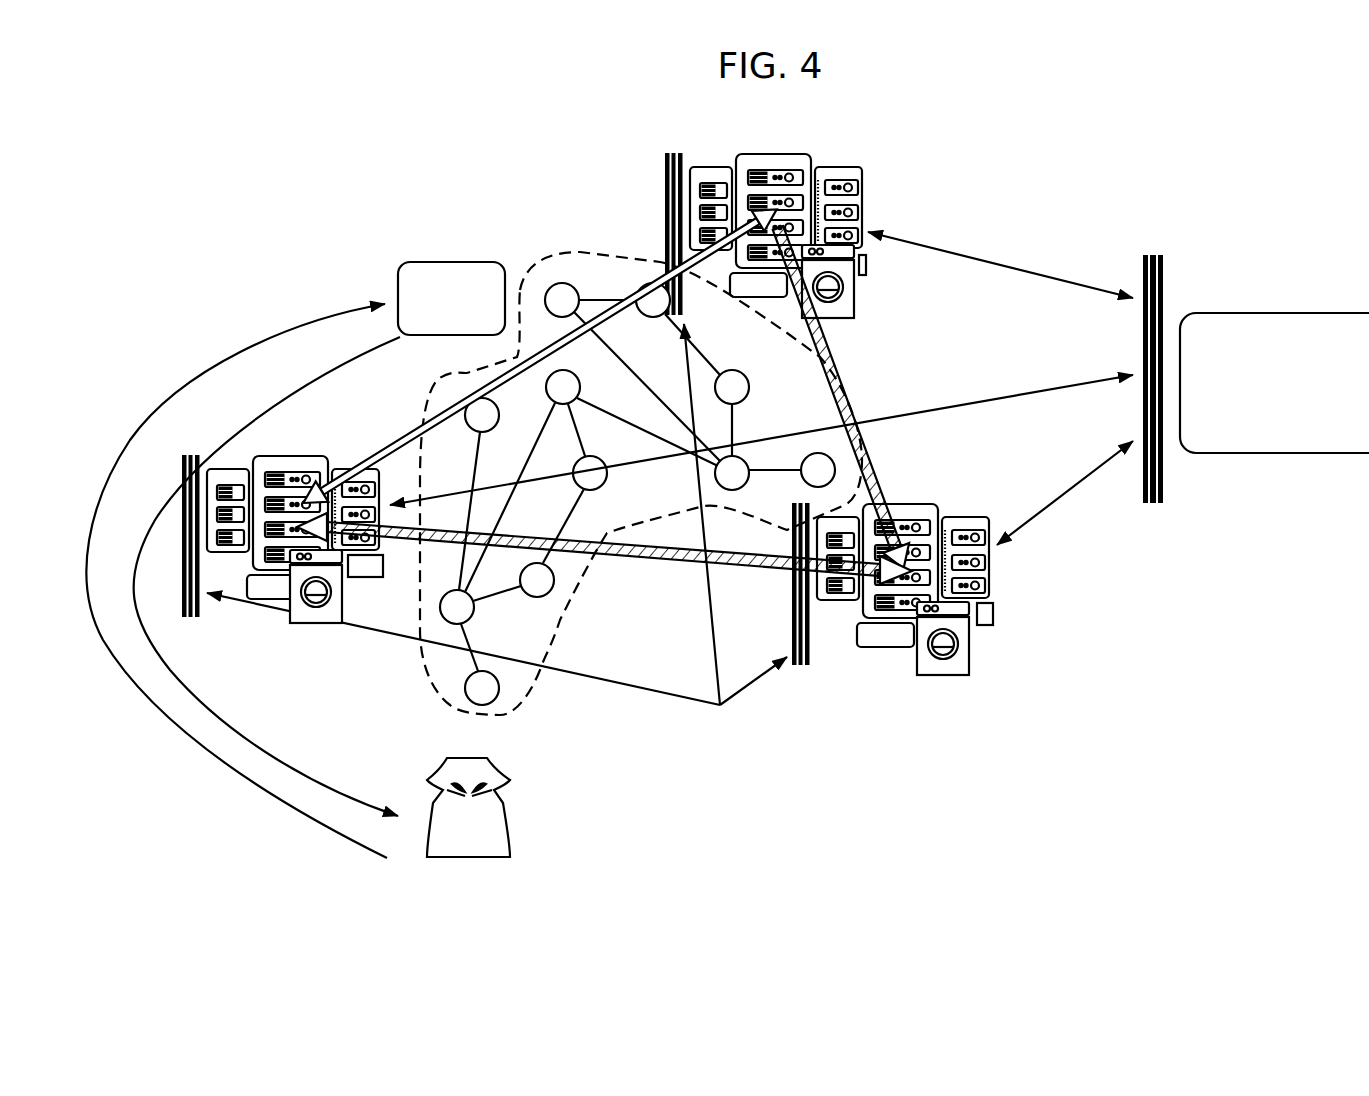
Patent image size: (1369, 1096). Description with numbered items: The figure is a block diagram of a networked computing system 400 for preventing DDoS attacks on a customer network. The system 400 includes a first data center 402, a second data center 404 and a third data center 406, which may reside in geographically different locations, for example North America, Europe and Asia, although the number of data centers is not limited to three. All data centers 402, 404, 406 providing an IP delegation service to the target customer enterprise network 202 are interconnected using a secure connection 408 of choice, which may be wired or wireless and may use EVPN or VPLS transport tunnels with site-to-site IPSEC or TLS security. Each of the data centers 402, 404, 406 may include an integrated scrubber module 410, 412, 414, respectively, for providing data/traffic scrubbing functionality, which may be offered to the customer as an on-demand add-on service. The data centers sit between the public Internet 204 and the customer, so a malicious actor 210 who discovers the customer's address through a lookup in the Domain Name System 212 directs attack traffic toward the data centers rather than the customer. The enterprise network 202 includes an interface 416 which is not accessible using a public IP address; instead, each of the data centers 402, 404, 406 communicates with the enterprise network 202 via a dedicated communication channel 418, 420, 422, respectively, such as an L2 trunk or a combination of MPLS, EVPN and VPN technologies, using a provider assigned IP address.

The networked computing system 400 is at (250, 214).
The enterprise network 202 is at (1290, 313).
The public Internet 204 is at (578, 620).
The malicious actor 210 is at (505, 828).
The Domain Name System 212 is at (437, 262).
The first data center 402 is at (866, 190).
The second data center 404 is at (994, 618).
The third data center 406 is at (296, 456).
The secure connection 408 is at (432, 420).
The scrubber module 410 is at (858, 307).
The scrubber module 412 is at (972, 660).
The scrubber module 414 is at (290, 622).
The interface 416 is at (1165, 475).
The dedicated communication channel 418 is at (1000, 262).
The dedicated communication channel 420 is at (1078, 483).
The dedicated communication channel 422 is at (990, 393).